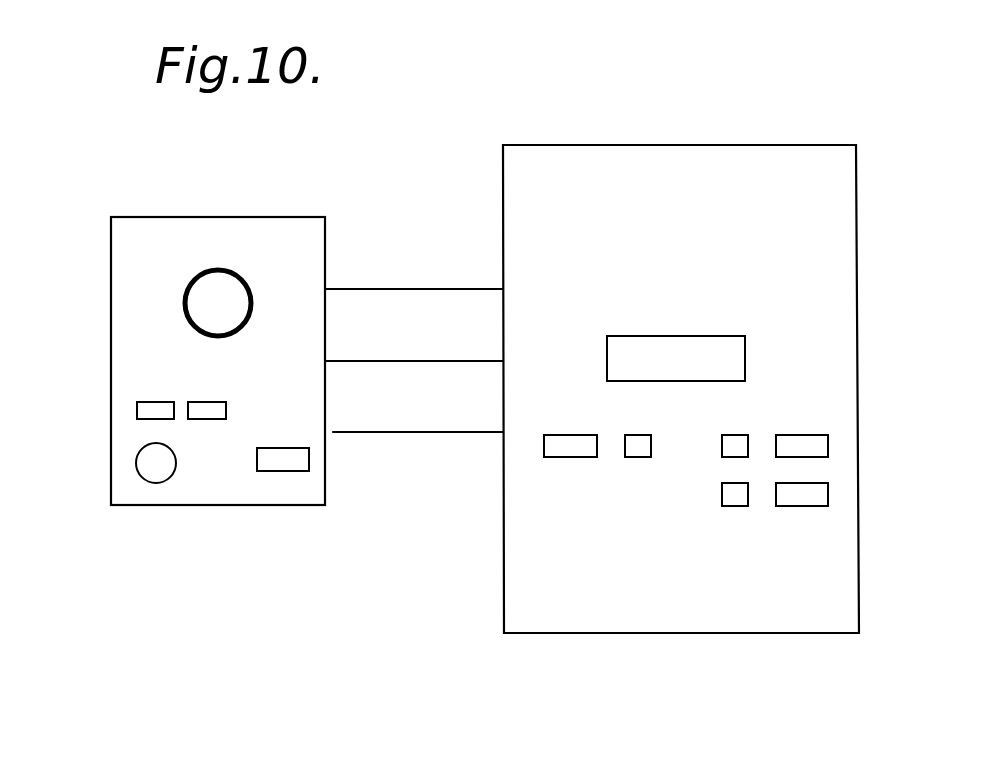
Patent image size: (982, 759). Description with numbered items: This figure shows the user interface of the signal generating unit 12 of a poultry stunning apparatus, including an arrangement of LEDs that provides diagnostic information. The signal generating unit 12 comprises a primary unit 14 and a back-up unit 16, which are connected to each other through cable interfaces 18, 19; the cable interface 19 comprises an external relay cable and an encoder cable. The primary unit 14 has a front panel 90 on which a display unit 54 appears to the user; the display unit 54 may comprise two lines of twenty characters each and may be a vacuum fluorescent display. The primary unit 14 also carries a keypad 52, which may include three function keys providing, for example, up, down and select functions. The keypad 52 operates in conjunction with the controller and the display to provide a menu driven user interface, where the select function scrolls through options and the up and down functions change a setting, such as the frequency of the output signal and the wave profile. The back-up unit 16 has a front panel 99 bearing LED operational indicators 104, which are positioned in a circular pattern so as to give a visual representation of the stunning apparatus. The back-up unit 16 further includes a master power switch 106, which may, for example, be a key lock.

The signal generating unit 12 is at (193, 523).
The primary unit 14 is at (697, 613).
The back-up unit 16 is at (146, 240).
The cable interface 18 is at (440, 320).
The cable interface 19 is at (390, 433).
The keypad 52 is at (722, 453).
The display unit 54 is at (690, 350).
The front panel 90 is at (806, 595).
The front panel 99 is at (234, 500).
The LED operational indicators 104 is at (243, 273).
The master power switch 106 is at (141, 476).